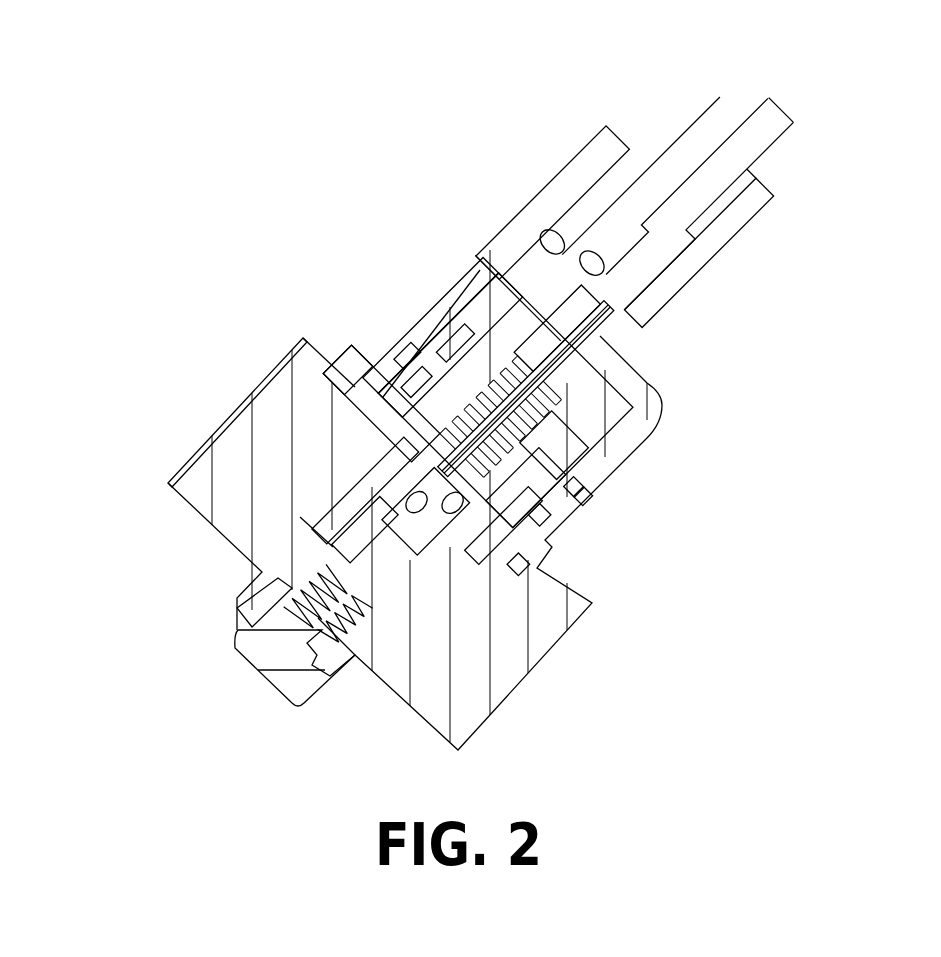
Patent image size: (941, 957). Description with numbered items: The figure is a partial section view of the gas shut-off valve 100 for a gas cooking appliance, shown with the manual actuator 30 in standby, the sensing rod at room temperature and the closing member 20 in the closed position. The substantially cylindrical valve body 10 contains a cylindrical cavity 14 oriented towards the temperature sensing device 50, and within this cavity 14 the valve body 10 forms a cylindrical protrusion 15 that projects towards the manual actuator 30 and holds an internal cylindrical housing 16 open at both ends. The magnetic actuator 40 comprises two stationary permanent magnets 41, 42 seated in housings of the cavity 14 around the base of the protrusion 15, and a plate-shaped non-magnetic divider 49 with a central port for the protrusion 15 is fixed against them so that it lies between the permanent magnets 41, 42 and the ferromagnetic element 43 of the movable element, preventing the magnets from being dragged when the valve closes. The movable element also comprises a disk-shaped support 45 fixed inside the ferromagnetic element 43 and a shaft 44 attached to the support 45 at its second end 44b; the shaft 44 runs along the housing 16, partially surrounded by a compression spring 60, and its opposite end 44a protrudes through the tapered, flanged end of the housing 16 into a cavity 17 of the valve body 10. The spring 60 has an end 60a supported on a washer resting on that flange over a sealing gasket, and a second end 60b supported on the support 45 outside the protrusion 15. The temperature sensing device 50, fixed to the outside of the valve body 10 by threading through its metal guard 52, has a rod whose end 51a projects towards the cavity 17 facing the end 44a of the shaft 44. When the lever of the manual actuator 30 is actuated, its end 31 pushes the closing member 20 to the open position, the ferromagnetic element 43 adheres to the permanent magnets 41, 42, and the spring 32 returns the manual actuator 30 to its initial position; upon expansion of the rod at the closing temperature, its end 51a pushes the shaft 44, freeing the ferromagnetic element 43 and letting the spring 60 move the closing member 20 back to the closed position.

The gas shut-off valve 100 is at (202, 205).
The valve body 10 is at (302, 382).
The cavity 14 is at (393, 360).
The protrusion 15 is at (577, 492).
The housing 16 is at (583, 497).
The cavity 17 is at (545, 323).
The closing member 20 is at (367, 463).
The manual actuator 30 is at (214, 620).
The end 31 is at (393, 517).
The spring 32 is at (293, 590).
The magnetic actuator 40 is at (570, 480).
The permanent magnet 41 is at (475, 345).
The permanent magnet 42 is at (562, 435).
The ferromagnetic element 43 is at (542, 518).
The shaft 44 is at (520, 347).
The end 44a is at (548, 358).
The second end 44b is at (485, 555).
The support 45 is at (522, 565).
The divider 49 is at (410, 357).
The temperature sensing device 50 is at (812, 252).
The end 51a is at (580, 313).
The guard 52 is at (710, 272).
The spring 60 is at (397, 363).
The end 60a is at (540, 407).
The second end 60b is at (347, 370).